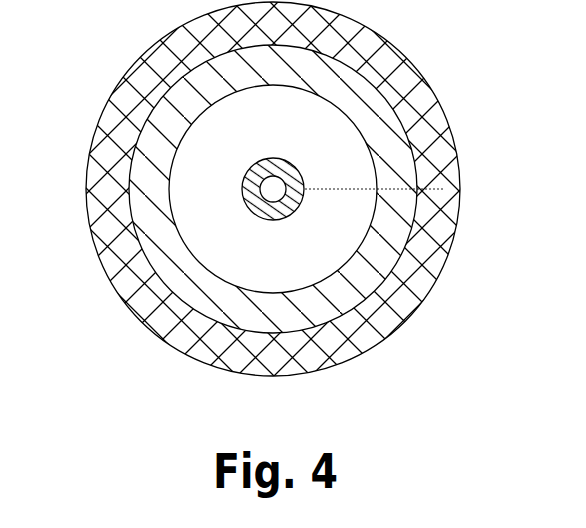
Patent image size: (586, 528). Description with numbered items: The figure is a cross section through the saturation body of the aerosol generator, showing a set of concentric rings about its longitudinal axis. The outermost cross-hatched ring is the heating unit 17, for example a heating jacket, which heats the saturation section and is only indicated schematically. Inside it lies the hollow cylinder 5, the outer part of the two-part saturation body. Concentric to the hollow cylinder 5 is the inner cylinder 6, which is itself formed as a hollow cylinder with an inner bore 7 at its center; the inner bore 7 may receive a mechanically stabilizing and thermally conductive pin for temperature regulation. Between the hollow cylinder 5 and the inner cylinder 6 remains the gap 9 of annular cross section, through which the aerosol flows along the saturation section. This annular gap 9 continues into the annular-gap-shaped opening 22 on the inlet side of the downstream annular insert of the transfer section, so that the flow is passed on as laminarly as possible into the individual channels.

The heating unit 17 is at (147, 83).
The hollow cylinder 5 is at (150, 183).
The gap 9 is at (233, 237).
The opening 22 is at (305, 147).
The inner bore 7 is at (278, 193).
The inner cylinder 6 is at (443, 189).